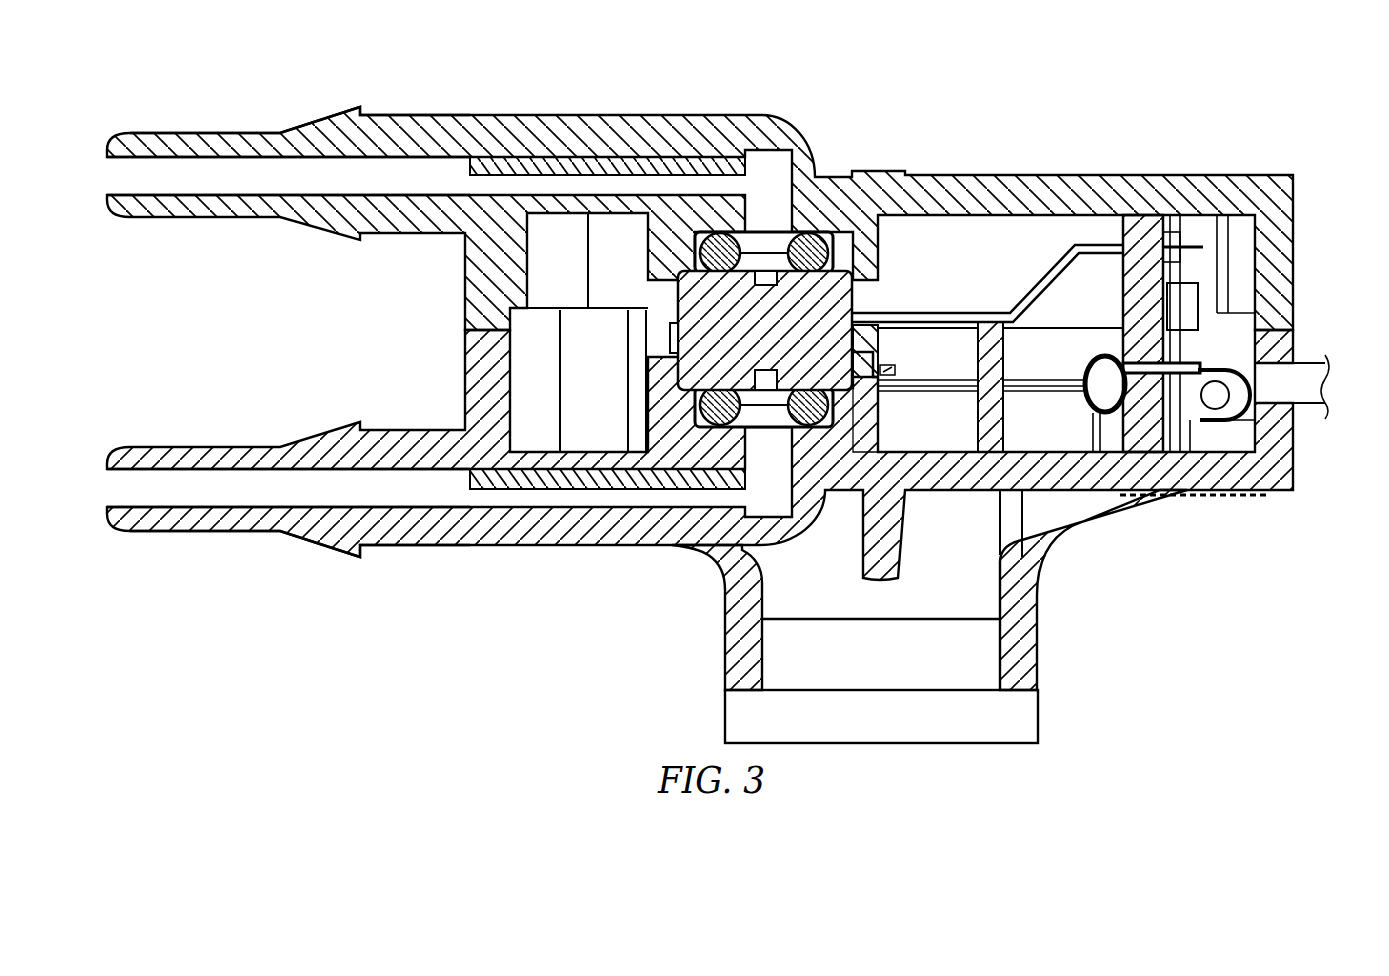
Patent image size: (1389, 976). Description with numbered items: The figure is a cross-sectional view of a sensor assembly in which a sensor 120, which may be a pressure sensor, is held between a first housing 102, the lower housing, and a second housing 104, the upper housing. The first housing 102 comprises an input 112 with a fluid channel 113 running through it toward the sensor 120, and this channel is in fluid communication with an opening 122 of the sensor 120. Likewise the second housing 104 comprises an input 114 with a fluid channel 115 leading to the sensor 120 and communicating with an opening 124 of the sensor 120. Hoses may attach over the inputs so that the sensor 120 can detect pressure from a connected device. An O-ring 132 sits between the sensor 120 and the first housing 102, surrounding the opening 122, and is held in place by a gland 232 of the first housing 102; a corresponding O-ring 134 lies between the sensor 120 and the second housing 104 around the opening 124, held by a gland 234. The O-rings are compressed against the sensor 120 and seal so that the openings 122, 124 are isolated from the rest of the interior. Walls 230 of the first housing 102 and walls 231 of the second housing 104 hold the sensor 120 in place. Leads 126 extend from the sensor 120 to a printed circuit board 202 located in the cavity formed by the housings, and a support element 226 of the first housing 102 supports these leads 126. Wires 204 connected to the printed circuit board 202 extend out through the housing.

The first housing 102 is at (615, 545).
The second housing 104 is at (648, 133).
The input 112 is at (215, 535).
The fluid channel 113 is at (130, 490).
The input 114 is at (190, 133).
The fluid channel 115 is at (130, 178).
The sensor 120 is at (789, 337).
The opening 122 is at (770, 343).
The opening 124 is at (765, 285).
The leads 126 is at (1038, 290).
The O-ring 132 is at (700, 410).
The O-ring 134 is at (878, 232).
The printed circuit board 202 is at (1142, 230).
The wires 204 is at (1322, 395).
The support element 226 is at (990, 360).
The walls 230 is at (660, 368).
The walls 231 is at (668, 278).
The gland 232 is at (875, 430).
The gland 234 is at (695, 240).